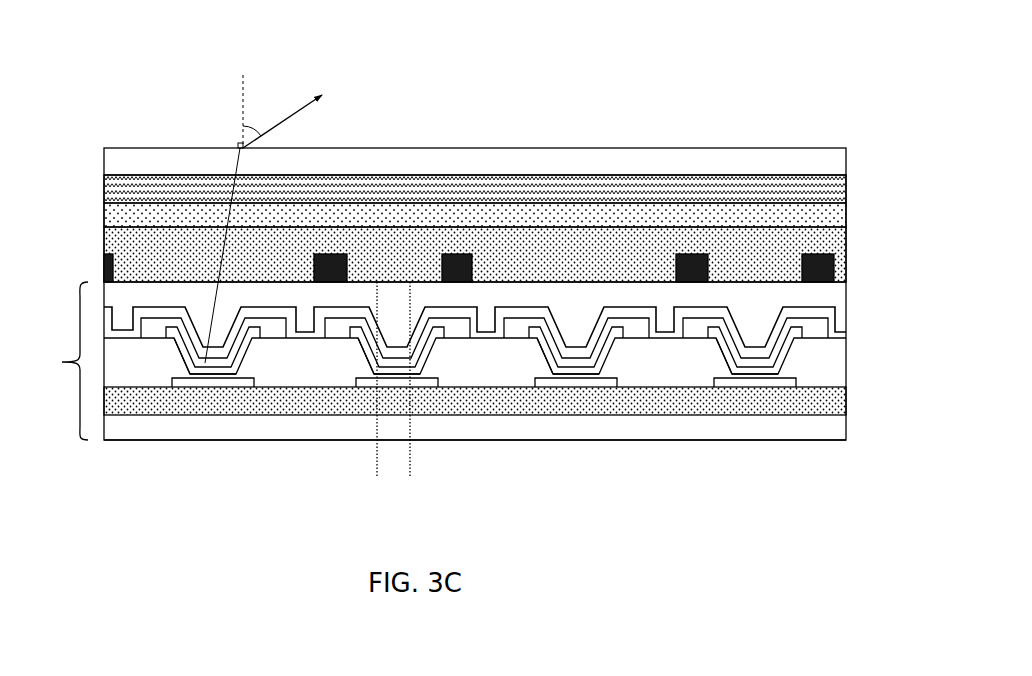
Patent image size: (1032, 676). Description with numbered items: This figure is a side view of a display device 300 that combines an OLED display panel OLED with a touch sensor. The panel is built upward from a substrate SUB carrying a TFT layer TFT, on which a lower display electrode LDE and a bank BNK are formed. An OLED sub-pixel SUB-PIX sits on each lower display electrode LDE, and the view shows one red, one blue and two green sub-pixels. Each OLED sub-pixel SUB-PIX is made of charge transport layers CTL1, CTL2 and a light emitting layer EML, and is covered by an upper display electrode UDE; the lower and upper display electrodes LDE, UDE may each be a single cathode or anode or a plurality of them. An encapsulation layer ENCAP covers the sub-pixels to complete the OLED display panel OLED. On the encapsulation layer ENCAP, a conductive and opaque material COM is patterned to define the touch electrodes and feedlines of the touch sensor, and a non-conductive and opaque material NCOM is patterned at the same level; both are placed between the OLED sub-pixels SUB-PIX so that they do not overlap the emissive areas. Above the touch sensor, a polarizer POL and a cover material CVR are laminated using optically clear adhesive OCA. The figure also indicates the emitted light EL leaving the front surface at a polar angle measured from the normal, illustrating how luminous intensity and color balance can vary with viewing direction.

The display device 300 is at (128, 104).
The cover material CVR is at (98, 160).
The optically clear adhesive OCA is at (98, 187).
The polarizer POL is at (98, 212).
The conductive and opaque material COM is at (333, 254).
The non-conductive and opaque material NCOM is at (692, 255).
The encapsulation layer ENCAP is at (849, 305).
The upper display electrode UDE is at (849, 335).
The bank BNK is at (849, 367).
The TFT layer TFT is at (849, 400).
The substrate SUB is at (849, 427).
The OLED display panel OLED is at (52, 361).
The lower display electrode LDE is at (178, 390).
The light emitting layer EML is at (213, 377).
The first charge transport layer CTL1 is at (362, 373).
The second charge transport layer CTL2 is at (628, 336).
The OLED sub-pixel SUB-PIX is at (409, 475).
The emitted light direction EL is at (298, 101).